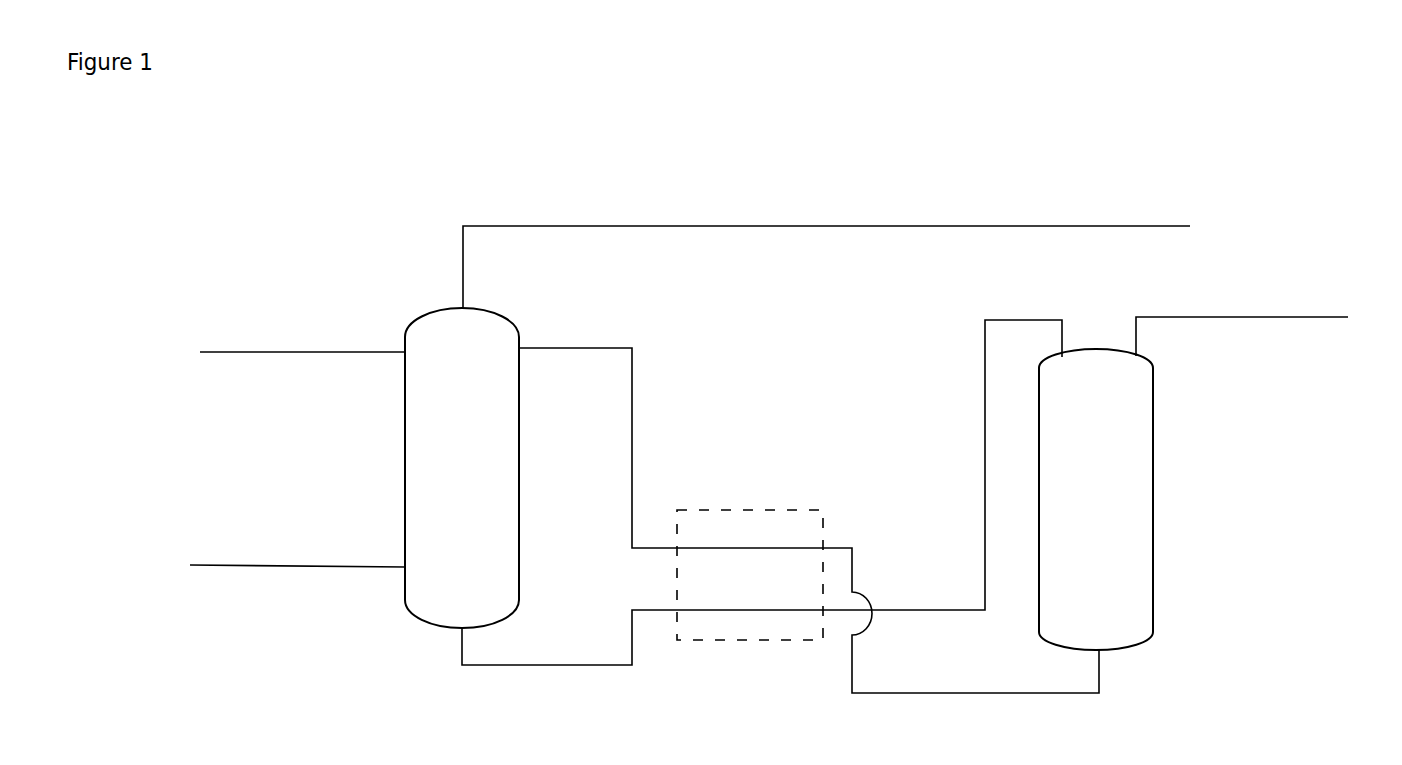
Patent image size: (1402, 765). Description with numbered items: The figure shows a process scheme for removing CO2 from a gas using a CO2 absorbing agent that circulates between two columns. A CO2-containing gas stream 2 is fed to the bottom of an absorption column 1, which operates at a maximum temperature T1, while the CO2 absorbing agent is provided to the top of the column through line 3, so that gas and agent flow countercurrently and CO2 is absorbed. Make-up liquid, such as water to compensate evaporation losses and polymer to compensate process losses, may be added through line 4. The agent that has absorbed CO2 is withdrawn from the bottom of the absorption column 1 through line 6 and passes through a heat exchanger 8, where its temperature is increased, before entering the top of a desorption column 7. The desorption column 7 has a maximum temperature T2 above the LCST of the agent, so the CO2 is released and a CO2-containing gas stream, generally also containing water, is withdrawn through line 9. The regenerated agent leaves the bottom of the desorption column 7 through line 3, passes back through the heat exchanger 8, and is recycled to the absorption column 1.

The absorption column 1 is at (462, 468).
The CO2-containing gas stream 2 is at (297, 591).
The line 3 is at (809, 520).
The line 4 is at (695, 276).
The line 6 is at (762, 492).
The desorption column 7 is at (1096, 499).
The heat exchanger 8 is at (750, 562).
The line 9 is at (1242, 323).